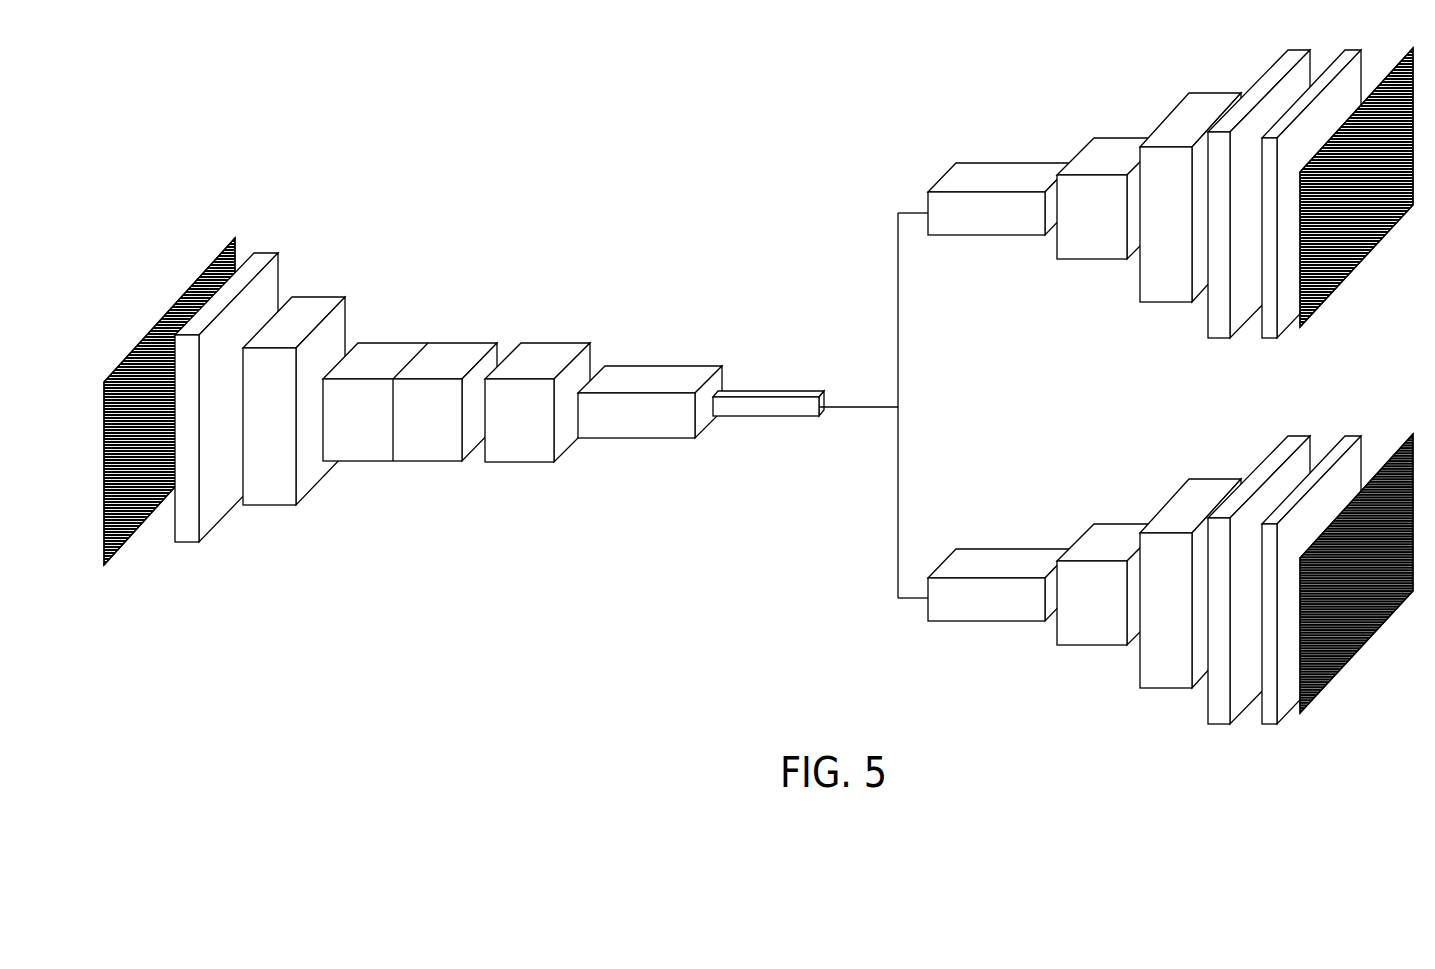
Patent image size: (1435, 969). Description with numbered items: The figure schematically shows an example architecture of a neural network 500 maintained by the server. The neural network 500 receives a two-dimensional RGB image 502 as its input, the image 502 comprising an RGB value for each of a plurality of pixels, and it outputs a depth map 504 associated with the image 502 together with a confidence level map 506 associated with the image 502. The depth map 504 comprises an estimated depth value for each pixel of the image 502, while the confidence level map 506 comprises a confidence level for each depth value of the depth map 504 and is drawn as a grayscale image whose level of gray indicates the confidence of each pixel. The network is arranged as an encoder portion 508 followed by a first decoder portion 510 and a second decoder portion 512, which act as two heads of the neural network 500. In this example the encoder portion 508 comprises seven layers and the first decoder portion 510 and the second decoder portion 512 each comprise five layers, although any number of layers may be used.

The neural network 500 is at (210, 148).
The image 502 is at (168, 312).
The depth map 504 is at (1352, 266).
The confidence level map 506 is at (1352, 652).
The encoder portion 508 is at (418, 565).
The first decoder portion 510 is at (987, 115).
The second decoder portion 512 is at (1093, 688).